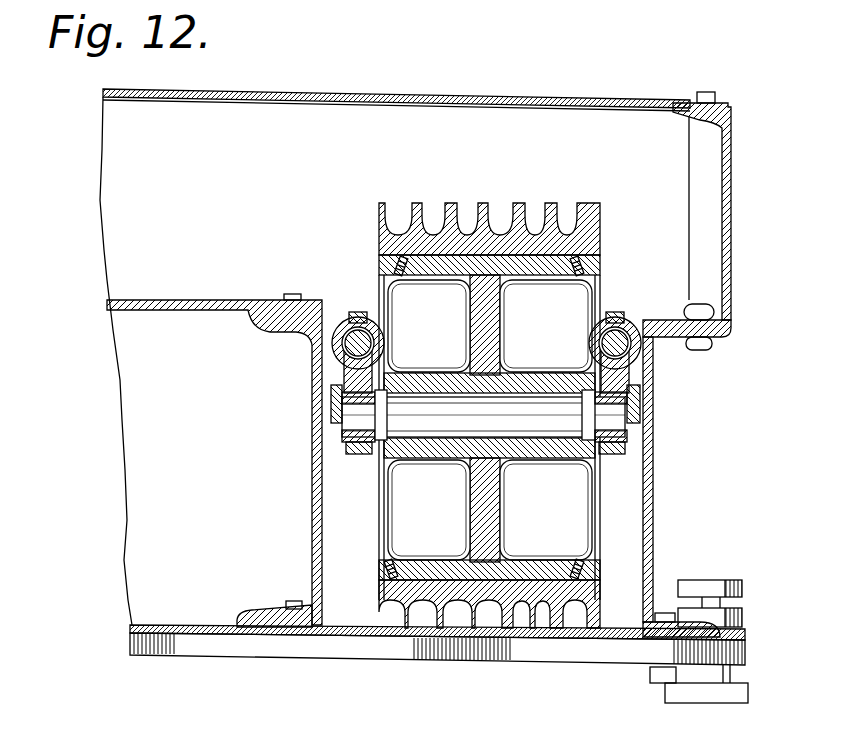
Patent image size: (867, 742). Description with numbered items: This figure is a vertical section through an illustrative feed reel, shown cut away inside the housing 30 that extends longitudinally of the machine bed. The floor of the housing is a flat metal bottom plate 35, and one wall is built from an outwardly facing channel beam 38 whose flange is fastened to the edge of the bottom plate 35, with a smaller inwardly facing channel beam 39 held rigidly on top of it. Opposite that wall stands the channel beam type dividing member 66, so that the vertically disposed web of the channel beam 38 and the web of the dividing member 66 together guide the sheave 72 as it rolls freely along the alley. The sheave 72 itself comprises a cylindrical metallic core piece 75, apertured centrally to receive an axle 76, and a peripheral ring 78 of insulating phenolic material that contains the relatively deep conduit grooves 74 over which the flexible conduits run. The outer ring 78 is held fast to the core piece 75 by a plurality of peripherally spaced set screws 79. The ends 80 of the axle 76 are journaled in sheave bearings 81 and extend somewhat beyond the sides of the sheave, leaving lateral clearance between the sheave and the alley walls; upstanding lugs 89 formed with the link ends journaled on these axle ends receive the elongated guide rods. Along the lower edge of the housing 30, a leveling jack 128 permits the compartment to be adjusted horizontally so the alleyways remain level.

The housing 30 is at (570, 97).
The channel beam 39 is at (731, 208).
The peripheral grooves 74 is at (467, 220).
The peripheral ring 78 is at (565, 210).
The sheave 72 is at (510, 399).
The upstanding lugs 89 is at (333, 316).
The set screws 79 is at (399, 278).
The core piece 75 is at (497, 335).
The sheave bearings 81 is at (590, 397).
The dividing member 66 is at (313, 408).
The axle ends 80 is at (338, 443).
The axle 76 is at (425, 428).
The channel beam 38 is at (653, 537).
The bottom plate 35 is at (433, 648).
The leveling jacks 128 is at (707, 693).